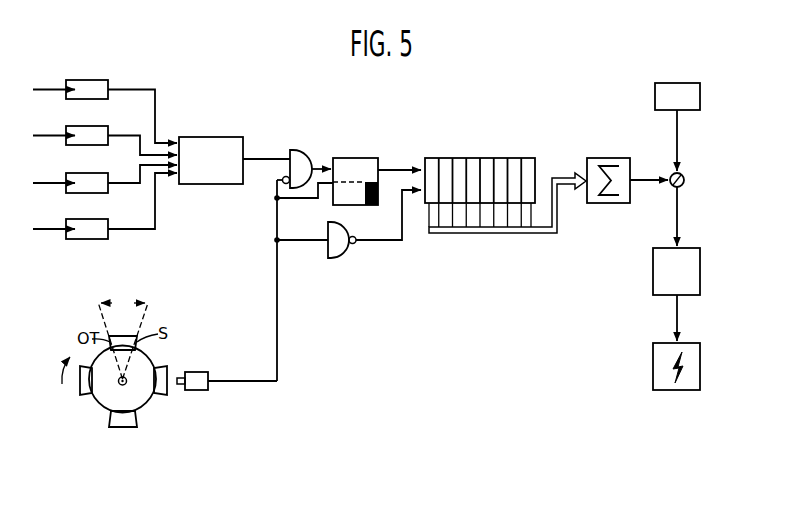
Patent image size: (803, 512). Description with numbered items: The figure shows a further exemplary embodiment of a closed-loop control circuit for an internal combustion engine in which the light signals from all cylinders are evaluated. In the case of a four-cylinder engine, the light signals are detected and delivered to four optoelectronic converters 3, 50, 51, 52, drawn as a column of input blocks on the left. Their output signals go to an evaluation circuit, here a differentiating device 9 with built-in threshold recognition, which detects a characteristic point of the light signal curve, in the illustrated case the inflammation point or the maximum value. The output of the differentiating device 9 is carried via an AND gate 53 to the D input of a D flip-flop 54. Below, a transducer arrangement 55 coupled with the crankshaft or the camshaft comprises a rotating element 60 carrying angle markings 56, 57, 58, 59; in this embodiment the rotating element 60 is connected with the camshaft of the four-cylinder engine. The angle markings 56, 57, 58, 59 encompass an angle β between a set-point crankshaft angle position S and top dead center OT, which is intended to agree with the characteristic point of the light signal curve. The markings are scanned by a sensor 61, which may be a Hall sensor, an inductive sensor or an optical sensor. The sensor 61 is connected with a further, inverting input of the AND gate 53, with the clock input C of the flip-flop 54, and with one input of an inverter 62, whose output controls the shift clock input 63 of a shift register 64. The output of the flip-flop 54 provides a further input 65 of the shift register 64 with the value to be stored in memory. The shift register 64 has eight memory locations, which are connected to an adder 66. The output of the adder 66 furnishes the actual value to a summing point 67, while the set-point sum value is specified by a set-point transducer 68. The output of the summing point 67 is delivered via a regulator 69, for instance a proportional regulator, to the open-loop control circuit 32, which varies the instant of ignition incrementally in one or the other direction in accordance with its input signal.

The optoelectronic converter 3 is at (90, 89).
The optoelectronic converter 50 is at (100, 131).
The optoelectronic converter 51 is at (96, 184).
The optoelectronic converter 52 is at (96, 230).
The differentiating device 9 is at (199, 149).
The AND gate 53 is at (300, 161).
The D flip-flop 54 is at (356, 165).
The inverter 62 is at (340, 252).
The further input 65 is at (418, 167).
The shift clock input 63 is at (415, 189).
The shift register 64 is at (468, 157).
The adder 66 is at (617, 165).
The set-point transducer 68 is at (657, 93).
The summing point 67 is at (680, 186).
The regulator 69 is at (660, 268).
The open-loop control circuit 32 is at (663, 352).
The rotating element 60 is at (110, 395).
The angle marking 58 is at (122, 342).
The angle marking 57 is at (85, 388).
The angle marking 59 is at (165, 383).
The angle marking 56 is at (123, 422).
The transducer arrangement 55 is at (150, 414).
The sensor 61 is at (193, 379).